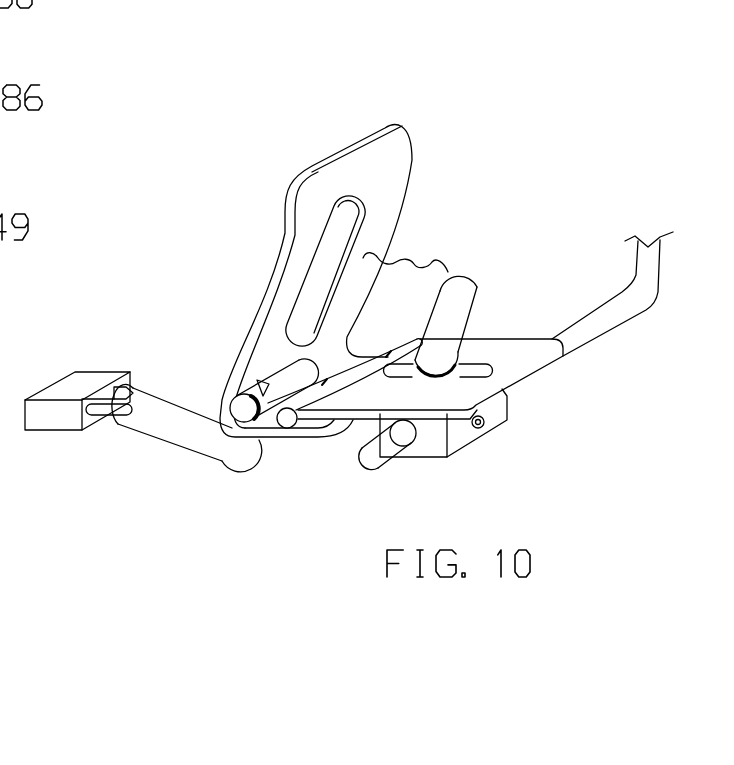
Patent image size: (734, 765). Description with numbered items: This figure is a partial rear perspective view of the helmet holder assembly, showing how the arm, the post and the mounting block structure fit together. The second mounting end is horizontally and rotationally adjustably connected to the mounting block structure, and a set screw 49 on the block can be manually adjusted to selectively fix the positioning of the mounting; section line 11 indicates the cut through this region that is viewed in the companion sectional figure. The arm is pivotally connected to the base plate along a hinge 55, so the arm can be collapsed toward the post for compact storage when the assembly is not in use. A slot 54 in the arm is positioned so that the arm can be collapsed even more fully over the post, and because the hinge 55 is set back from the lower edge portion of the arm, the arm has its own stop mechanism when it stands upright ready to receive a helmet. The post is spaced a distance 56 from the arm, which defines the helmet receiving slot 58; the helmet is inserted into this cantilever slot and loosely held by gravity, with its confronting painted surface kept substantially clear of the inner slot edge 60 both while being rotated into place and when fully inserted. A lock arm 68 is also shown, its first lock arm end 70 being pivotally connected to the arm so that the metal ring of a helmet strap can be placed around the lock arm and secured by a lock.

The section line 11 is at (692, 350).
The set screw 49 is at (488, 428).
The slot 54 is at (357, 218).
The hinge 55 is at (287, 428).
The distance 56 is at (413, 233).
The helmet receiving slot 58 is at (527, 215).
The inner slot edge 60 is at (395, 158).
The lock arm 68 is at (163, 425).
The first lock arm end 70 is at (268, 392).